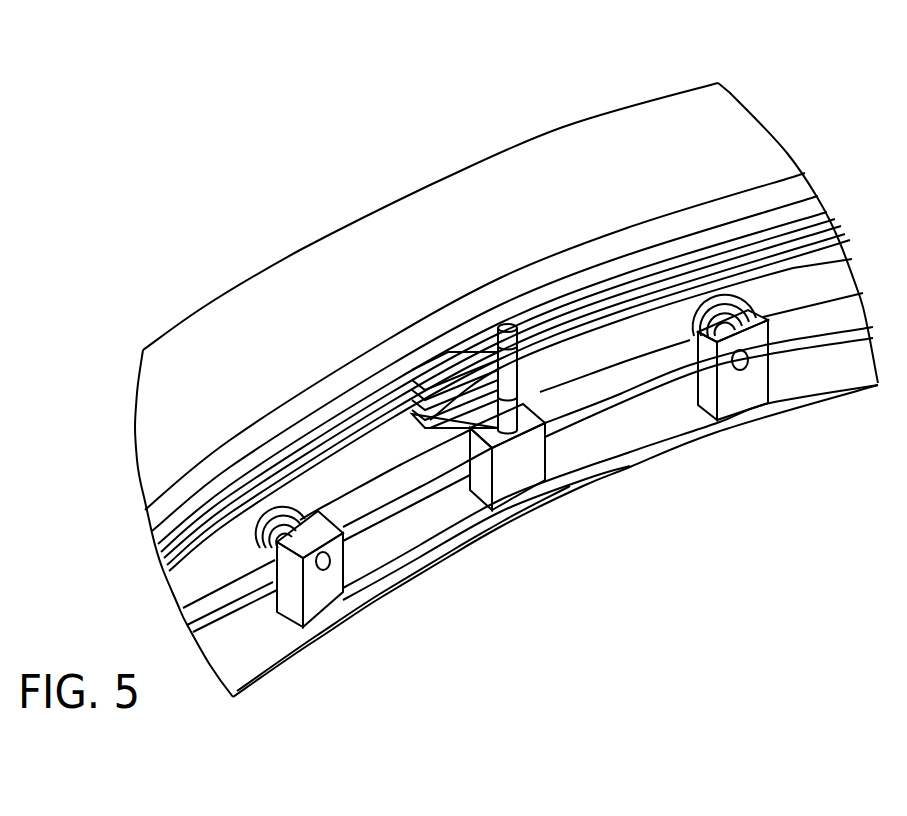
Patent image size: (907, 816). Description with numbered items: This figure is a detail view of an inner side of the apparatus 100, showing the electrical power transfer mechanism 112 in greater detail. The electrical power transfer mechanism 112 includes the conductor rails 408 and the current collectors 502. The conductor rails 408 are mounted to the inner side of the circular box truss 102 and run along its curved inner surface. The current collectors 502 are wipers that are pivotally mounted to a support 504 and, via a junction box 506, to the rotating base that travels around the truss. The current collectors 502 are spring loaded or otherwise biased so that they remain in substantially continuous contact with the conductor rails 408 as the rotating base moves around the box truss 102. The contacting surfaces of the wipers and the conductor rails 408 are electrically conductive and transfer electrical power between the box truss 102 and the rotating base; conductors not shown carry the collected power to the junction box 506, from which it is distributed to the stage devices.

The apparatus 100 is at (574, 94).
The circular truss 102 is at (421, 275).
The conductor rails 408 is at (332, 457).
The electrical power transfer mechanism 112 is at (403, 450).
The current collectors 502 is at (458, 383).
The support 504 is at (503, 325).
The junction box 506 is at (520, 465).